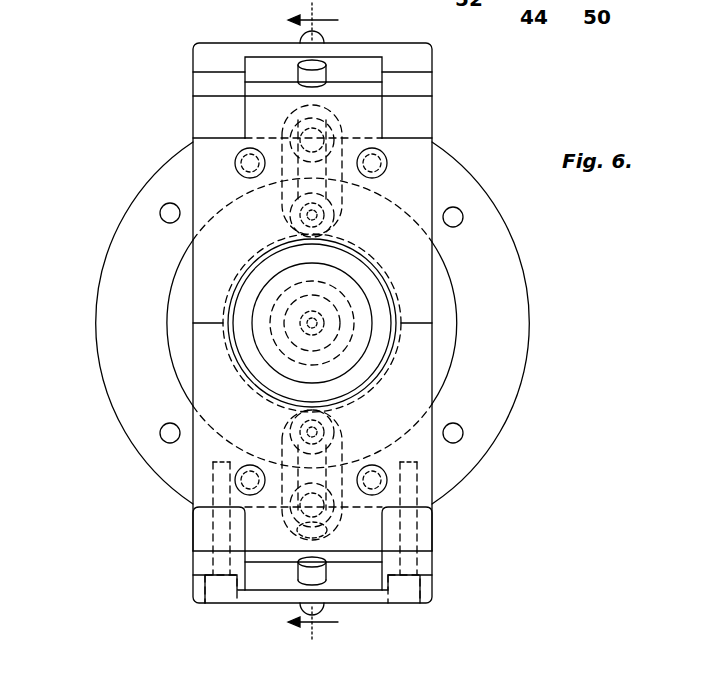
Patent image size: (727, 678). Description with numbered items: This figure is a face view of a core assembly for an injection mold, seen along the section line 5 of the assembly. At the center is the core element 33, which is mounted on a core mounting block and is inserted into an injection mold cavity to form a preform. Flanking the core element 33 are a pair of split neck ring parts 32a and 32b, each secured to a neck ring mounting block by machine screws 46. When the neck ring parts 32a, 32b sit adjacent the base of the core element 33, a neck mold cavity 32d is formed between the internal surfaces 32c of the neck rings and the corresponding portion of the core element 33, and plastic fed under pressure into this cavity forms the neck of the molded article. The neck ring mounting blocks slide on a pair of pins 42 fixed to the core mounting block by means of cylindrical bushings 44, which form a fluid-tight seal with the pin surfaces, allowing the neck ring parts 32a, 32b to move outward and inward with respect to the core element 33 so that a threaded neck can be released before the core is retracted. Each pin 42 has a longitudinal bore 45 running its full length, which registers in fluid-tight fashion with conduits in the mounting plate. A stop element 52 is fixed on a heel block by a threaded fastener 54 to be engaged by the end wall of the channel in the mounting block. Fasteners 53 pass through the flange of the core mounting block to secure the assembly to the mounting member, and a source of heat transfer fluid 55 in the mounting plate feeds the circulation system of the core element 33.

The section line 5- 5 is at (322, 322).
The neck ring part 32a is at (210, 150).
The neck ring part 32b is at (200, 452).
The internal surfaces of the neck rings 32c is at (348, 252).
The neck mold cavity 32d is at (380, 282).
The core element 33 is at (245, 340).
The pin 42 is at (432, 141).
The cylindrical bushing 44 is at (270, 186).
The longitudinal bore 45 is at (343, 126).
The machine screw 46 is at (235, 163).
The stop element 52 is at (298, 73).
The fastener 53 is at (160, 207).
The threaded fastener 54 is at (302, 40).
The source of heat transfer fluid 55 is at (125, 258).